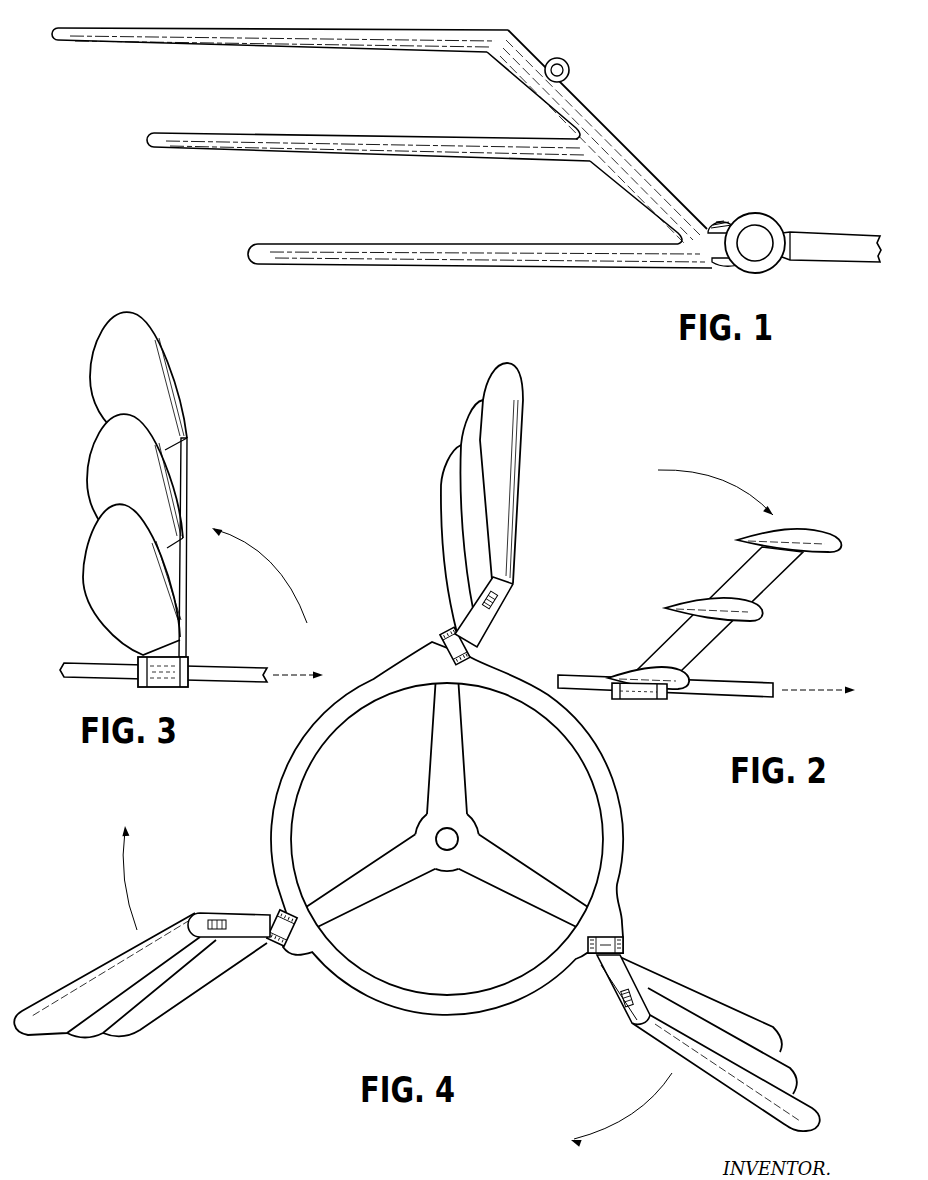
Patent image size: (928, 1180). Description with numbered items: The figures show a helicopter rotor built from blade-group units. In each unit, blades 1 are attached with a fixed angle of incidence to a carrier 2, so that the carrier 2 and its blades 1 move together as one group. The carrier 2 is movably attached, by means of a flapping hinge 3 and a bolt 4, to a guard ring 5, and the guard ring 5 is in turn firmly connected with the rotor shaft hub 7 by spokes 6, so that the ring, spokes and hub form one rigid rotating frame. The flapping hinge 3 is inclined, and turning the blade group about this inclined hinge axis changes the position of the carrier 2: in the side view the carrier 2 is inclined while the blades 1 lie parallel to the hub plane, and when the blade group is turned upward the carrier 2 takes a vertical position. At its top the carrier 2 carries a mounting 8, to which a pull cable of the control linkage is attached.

In FIG. 1, the blades 1 is at (98, 40).
In FIG. 3, the blades 1 is at (153, 389).
In FIG. 2, the blades 1 is at (817, 538).
In FIG. 4, the blades 1 is at (500, 397).
In FIG. 1, the carrier 2 is at (641, 164).
In FIG. 3, the carrier 2 is at (177, 476).
In FIG. 2, the carrier 2 is at (745, 577).
In FIG. 4, the carrier 2 is at (240, 912).
In FIG. 1, the flapping hinge 3 is at (730, 218).
In FIG. 3, the flapping hinge 3 is at (137, 658).
In FIG. 2, the flapping hinge 3 is at (650, 700).
In FIG. 4, the flapping hinge 3 is at (448, 633).
In FIG. 1, the bolt 4 is at (757, 240).
In FIG. 1, the guard ring 5 is at (815, 240).
In FIG. 3, the guard ring 5 is at (233, 670).
In FIG. 2, the guard ring 5 is at (733, 688).
In FIG. 4, the guard ring 5 is at (627, 857).
In FIG. 4, the spokes 6 is at (453, 772).
In FIG. 4, the rotor shaft hub 7 is at (395, 812).
In FIG. 1, the mounting 8 is at (570, 70).
In FIG. 4, the mounting 8 is at (620, 1000).